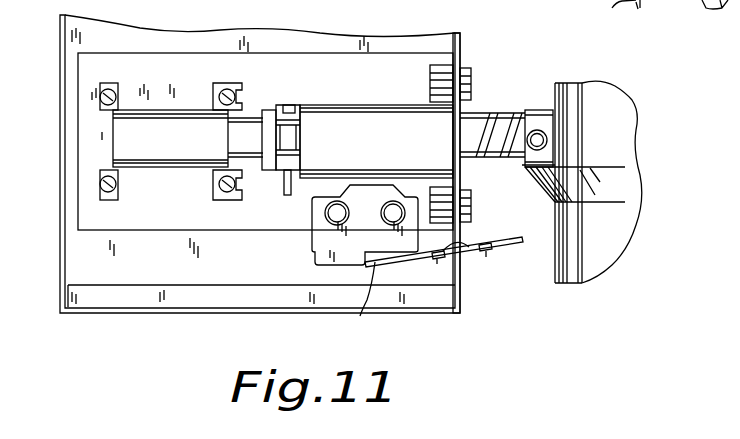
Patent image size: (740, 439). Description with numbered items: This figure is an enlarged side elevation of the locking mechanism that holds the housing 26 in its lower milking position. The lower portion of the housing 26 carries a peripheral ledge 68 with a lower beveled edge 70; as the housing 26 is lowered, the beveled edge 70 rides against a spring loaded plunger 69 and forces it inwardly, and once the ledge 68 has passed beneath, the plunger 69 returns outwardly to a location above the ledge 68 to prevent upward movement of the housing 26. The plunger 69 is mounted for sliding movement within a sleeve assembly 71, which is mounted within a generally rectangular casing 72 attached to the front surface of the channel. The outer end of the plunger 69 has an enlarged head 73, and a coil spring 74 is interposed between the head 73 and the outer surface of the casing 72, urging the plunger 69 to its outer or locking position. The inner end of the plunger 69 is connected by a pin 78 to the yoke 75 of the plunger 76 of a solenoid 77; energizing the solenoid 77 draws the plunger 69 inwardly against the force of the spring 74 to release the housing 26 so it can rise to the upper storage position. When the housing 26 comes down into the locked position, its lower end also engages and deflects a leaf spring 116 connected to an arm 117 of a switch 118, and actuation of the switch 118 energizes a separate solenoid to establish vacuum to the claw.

The housing 26 is at (625, 100).
The peripheral ledge 68 is at (615, 165).
The plunger 69 is at (538, 112).
The lower beveled edge 70 is at (556, 192).
The sleeve assembly 71 is at (398, 105).
The casing 72 is at (462, 33).
The enlarged head 73 is at (523, 166).
The coil spring 74 is at (506, 114).
The yoke 75 is at (281, 108).
The plunger 76 is at (243, 157).
The solenoid 77 is at (185, 118).
The pin 78 is at (292, 106).
The leaf spring 116 is at (503, 254).
The arm 117 is at (363, 298).
The switch 118 is at (312, 248).